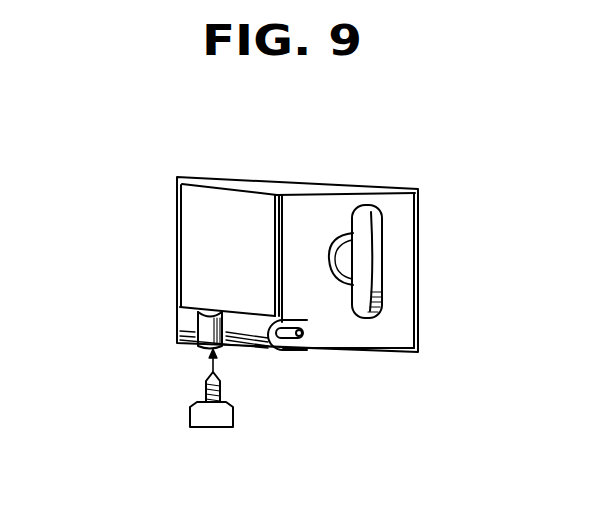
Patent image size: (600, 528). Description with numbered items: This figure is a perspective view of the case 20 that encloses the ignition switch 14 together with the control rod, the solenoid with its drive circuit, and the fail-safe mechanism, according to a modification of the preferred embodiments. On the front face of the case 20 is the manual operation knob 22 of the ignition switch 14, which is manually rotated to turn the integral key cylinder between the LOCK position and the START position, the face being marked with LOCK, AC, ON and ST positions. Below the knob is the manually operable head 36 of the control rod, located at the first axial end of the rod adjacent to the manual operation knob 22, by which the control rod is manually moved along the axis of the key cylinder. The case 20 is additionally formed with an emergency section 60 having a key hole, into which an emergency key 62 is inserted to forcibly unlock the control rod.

The ignition switch 14 is at (337, 164).
The case 20 is at (188, 252).
The manual operation knob 22 is at (377, 210).
The manually operable head 36 is at (302, 339).
The emergency section 60 is at (196, 345).
The emergency key 62 is at (220, 424).